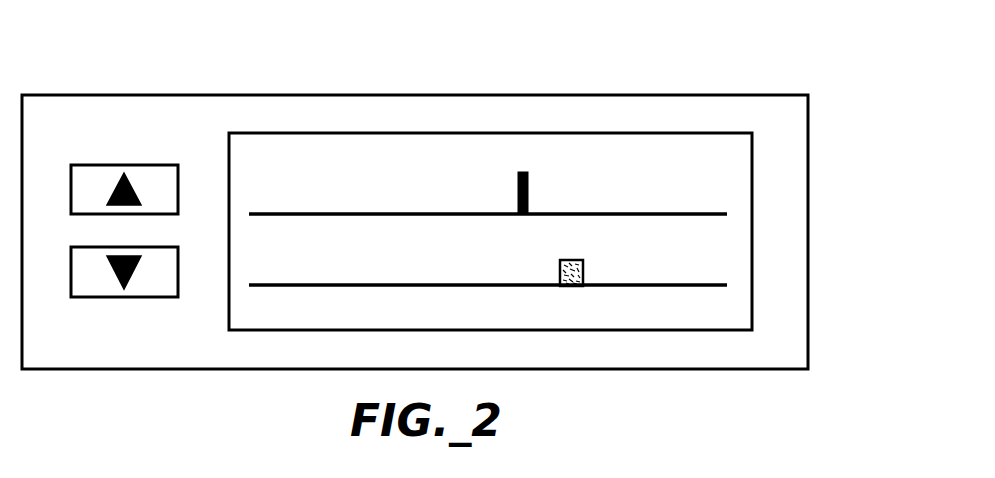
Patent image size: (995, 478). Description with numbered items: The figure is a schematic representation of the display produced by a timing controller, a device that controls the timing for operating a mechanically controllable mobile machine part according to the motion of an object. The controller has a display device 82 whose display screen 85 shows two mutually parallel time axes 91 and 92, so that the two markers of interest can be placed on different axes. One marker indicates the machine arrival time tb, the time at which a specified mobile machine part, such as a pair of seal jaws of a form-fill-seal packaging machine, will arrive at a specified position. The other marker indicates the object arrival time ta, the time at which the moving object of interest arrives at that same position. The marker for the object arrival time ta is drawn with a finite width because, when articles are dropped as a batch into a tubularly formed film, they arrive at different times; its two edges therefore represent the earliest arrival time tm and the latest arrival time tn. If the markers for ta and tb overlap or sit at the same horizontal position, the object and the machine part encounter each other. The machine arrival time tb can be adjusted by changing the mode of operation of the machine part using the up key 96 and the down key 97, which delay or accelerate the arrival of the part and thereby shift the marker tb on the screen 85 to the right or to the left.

The display device 82 is at (703, 81).
The display screen 85 is at (752, 211).
The up key 96 is at (146, 174).
The down key 97 is at (164, 282).
The time axis 92 is at (638, 214).
The time axis 91 is at (638, 285).
The machine arrival time tb is at (517, 188).
The object arrival time ta is at (572, 260).
The earliest arrival time tm is at (553, 287).
The latest arrival time tn is at (589, 287).